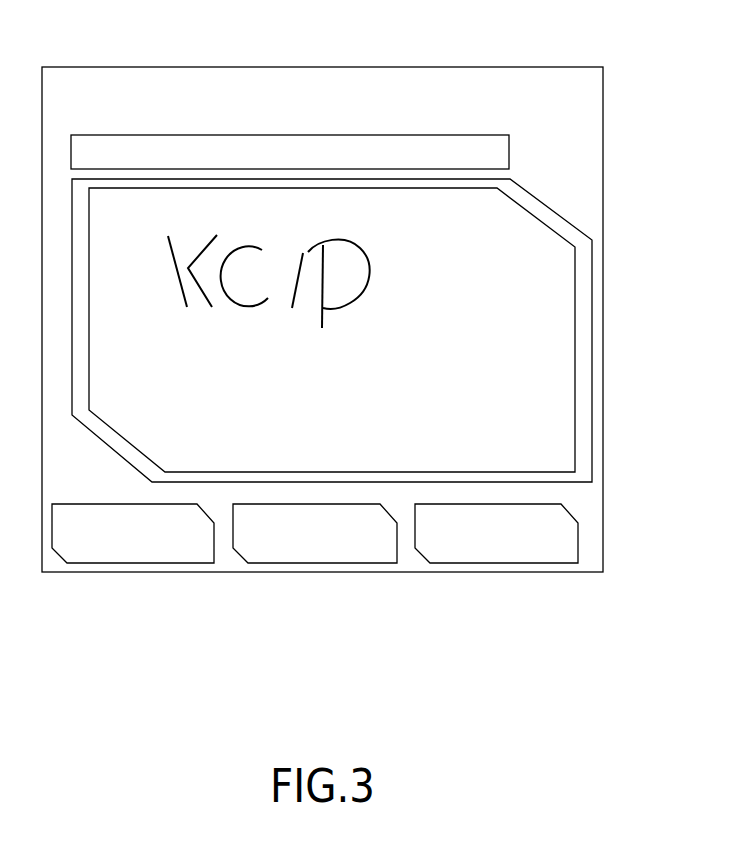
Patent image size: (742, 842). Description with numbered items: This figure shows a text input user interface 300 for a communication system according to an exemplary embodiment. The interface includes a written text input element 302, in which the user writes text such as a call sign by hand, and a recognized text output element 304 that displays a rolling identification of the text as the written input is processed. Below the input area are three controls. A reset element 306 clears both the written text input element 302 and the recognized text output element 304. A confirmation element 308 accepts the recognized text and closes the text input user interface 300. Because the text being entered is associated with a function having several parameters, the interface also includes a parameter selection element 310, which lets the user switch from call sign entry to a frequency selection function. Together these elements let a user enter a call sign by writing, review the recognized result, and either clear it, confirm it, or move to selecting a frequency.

The text input user interface 300 is at (614, 56).
The written text input element 302 is at (553, 295).
The recognized text output element 304 is at (304, 147).
The reset element 306 is at (137, 553).
The confirmation element 308 is at (495, 552).
The parameter selection element 310 is at (317, 552).